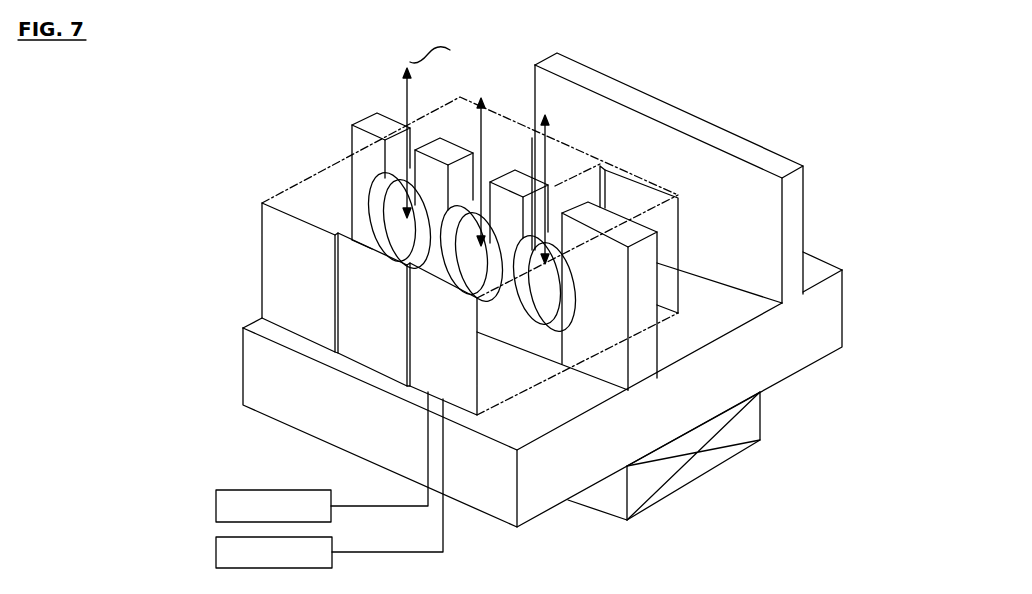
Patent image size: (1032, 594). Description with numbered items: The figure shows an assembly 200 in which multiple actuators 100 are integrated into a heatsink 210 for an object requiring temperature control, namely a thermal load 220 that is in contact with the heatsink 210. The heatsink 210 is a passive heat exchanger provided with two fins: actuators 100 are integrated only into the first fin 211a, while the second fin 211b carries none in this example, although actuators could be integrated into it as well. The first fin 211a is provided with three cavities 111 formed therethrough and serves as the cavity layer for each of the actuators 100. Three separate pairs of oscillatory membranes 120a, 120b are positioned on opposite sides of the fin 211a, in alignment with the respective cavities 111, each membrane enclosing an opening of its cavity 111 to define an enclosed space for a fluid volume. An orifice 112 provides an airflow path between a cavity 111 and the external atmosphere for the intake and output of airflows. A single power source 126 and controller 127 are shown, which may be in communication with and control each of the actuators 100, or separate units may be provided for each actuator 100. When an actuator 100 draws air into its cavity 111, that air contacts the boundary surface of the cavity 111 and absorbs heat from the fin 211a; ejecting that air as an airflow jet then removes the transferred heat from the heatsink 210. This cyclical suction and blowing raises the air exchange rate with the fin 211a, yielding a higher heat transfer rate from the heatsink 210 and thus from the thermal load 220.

The actuator 100 is at (354, 100).
The assembly 200 is at (797, 63).
The heatsink 210 is at (830, 326).
The first fin 211a is at (350, 127).
The second fin 211b is at (803, 212).
The thermal load 220 is at (745, 426).
The oscillatory membrane 120a is at (265, 246).
The oscillatory membrane 120b is at (632, 196).
The cavity 111 is at (552, 278).
The orifice 112 is at (568, 198).
The power source 126 is at (213, 508).
The controller 127 is at (213, 555).